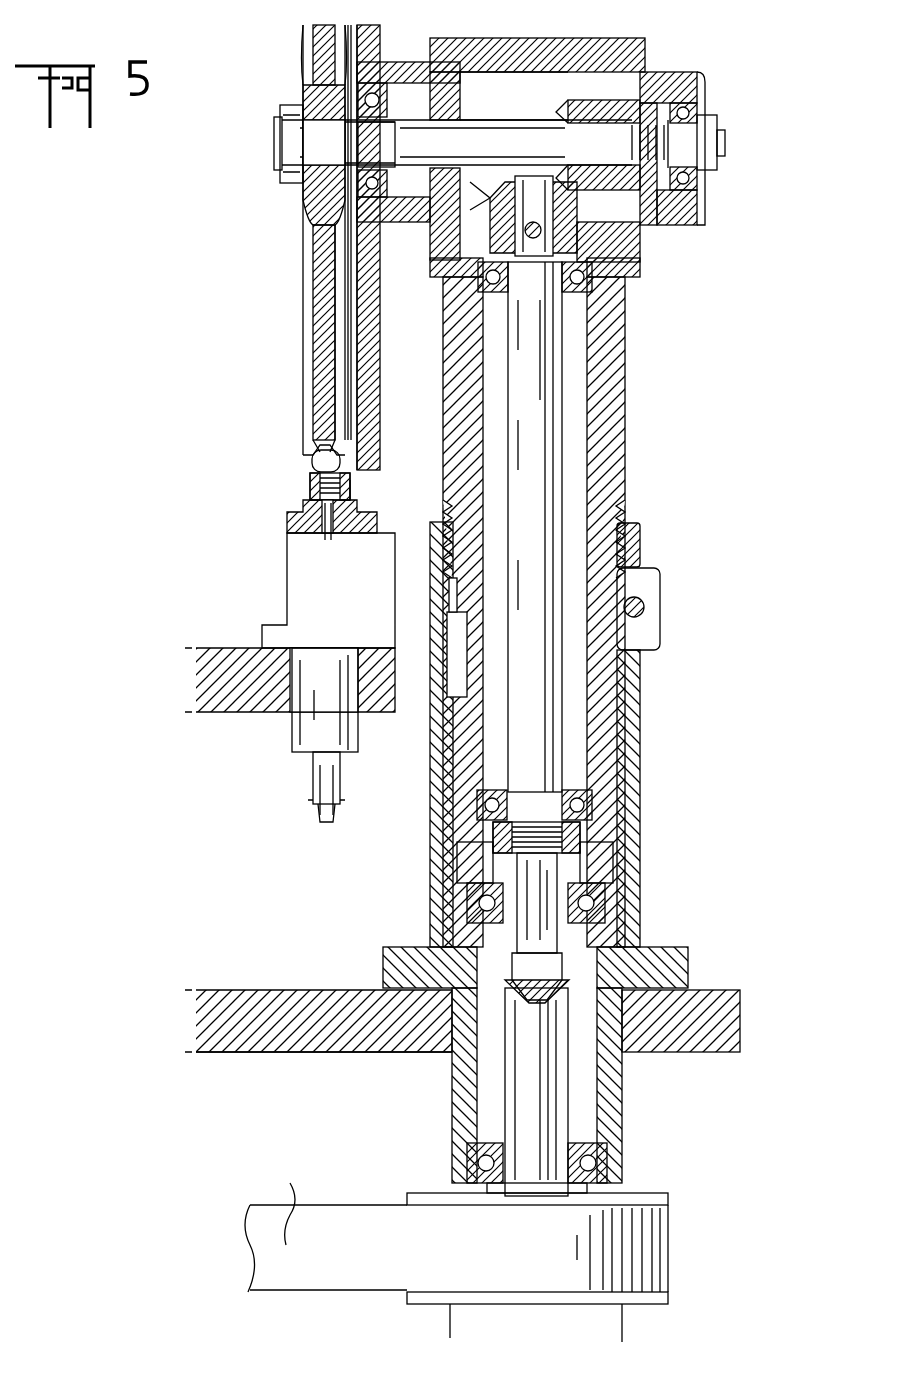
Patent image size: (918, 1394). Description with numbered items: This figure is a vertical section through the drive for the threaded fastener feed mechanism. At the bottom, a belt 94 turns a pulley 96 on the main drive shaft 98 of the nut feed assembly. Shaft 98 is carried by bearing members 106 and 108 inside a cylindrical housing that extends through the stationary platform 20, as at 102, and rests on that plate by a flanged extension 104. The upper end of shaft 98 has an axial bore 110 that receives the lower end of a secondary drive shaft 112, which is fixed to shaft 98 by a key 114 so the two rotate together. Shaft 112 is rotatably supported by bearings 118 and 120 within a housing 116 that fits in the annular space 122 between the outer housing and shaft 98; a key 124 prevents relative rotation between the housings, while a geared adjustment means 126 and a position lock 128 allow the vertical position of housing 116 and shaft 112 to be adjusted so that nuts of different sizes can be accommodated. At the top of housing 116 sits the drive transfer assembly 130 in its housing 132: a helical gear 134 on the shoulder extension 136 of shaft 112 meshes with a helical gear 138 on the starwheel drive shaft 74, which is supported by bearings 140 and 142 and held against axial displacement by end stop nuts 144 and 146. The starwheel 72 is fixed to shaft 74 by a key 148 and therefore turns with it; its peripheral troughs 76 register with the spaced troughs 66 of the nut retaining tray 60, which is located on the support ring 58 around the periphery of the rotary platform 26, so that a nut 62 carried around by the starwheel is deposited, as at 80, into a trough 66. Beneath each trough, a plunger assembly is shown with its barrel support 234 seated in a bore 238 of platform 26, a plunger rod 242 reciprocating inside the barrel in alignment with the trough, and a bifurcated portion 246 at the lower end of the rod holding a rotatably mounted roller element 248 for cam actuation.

The stationary platform 20 is at (318, 996).
The rotary platform 26 is at (276, 661).
The support ring 58 is at (316, 590).
The nut retaining tray 60 is at (303, 519).
The nut 62 is at (303, 490).
The trough 66 is at (373, 489).
The starwheel 72 is at (302, 240).
The starwheel drive shaft 74 is at (457, 123).
The starwheel trough 76 is at (308, 247).
The delivery point 80 is at (285, 465).
The belt 94 is at (326, 1225).
The pulley 96 is at (557, 1264).
The main drive shaft 98 is at (514, 1092).
The housing extension through plate 102 is at (562, 1021).
The flanged extension 104 is at (552, 956).
The bearing member 106 is at (572, 1157).
The bearing member 108 is at (577, 903).
The axial bore 110 is at (489, 928).
The secondary drive shaft 112 is at (592, 527).
The key 114 is at (550, 853).
The housing 116 is at (555, 602).
The bearing 118 is at (583, 802).
The bearing 120 is at (577, 283).
The annular space 122 is at (499, 864).
The key 124 is at (423, 734).
The geared adjustment means 126 is at (660, 545).
The position lock 128 is at (664, 757).
The drive transfer assembly 130 is at (823, 76).
The housing 132 is at (527, 242).
The helical gear 134 is at (423, 184).
The shoulder extension 136 is at (523, 197).
The helical gear 138 is at (601, 132).
The bearing 140 is at (400, 102).
The bearing 142 is at (712, 148).
The end stop nut 144 is at (263, 152).
The end stop nut 146 is at (718, 154).
The key 148 is at (297, 125).
The barrel support 234 is at (295, 704).
The bore 238 is at (300, 680).
The plunger rod 242 is at (345, 537).
The bifurcated portion 246 is at (295, 783).
The roller element 248 is at (294, 825).